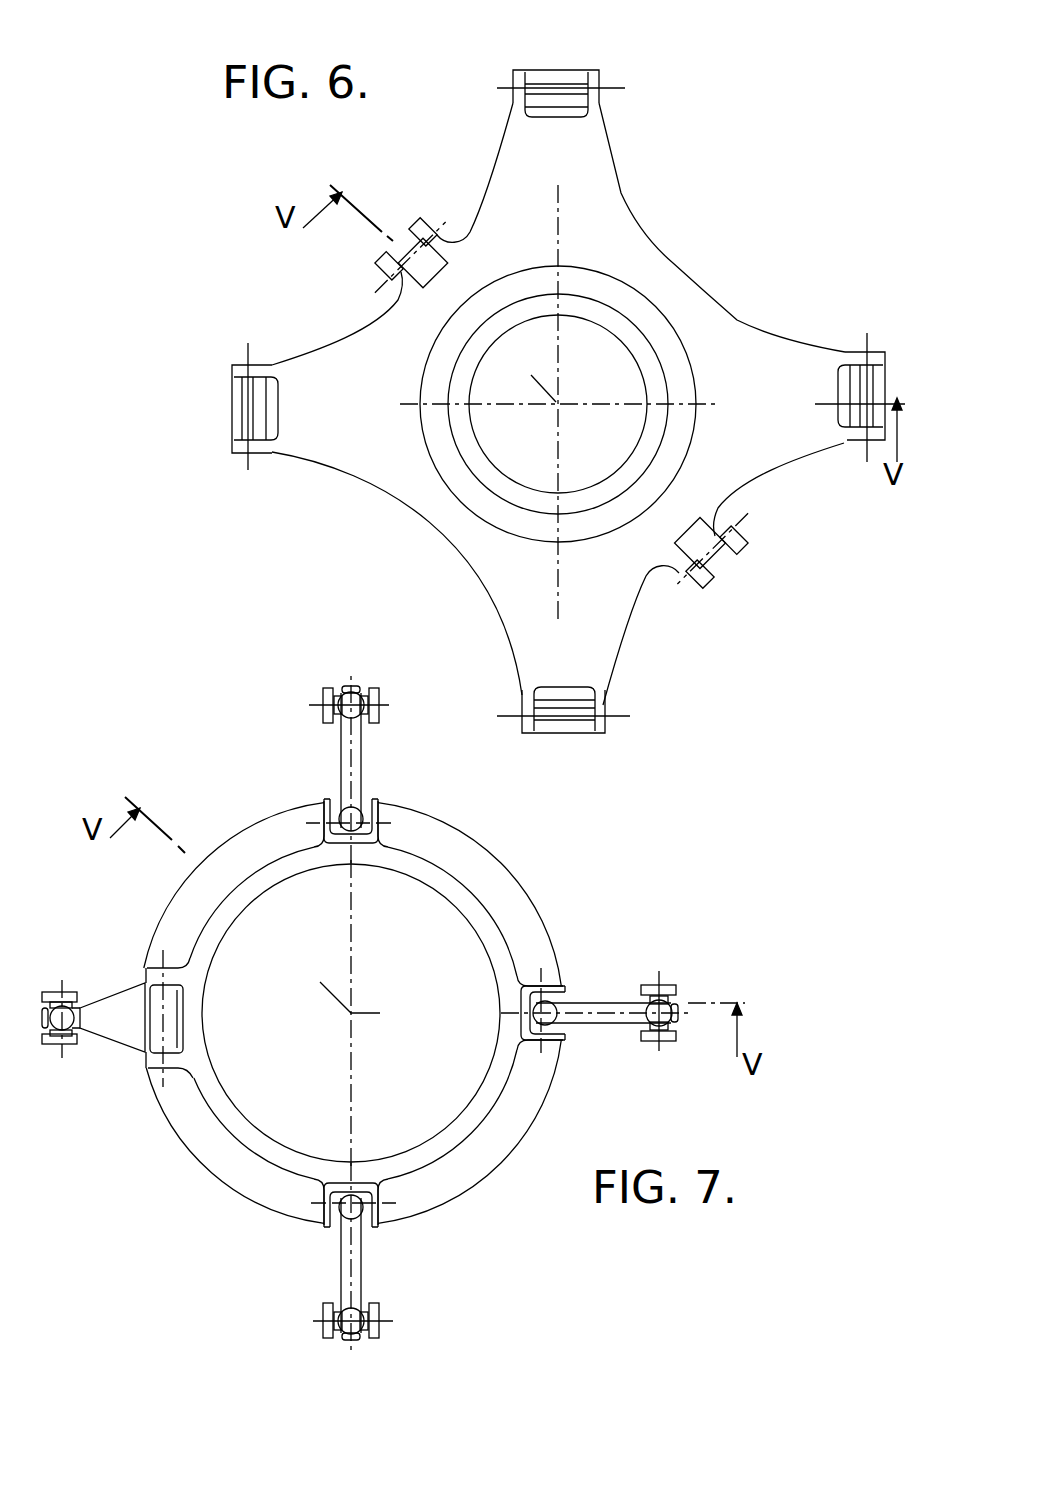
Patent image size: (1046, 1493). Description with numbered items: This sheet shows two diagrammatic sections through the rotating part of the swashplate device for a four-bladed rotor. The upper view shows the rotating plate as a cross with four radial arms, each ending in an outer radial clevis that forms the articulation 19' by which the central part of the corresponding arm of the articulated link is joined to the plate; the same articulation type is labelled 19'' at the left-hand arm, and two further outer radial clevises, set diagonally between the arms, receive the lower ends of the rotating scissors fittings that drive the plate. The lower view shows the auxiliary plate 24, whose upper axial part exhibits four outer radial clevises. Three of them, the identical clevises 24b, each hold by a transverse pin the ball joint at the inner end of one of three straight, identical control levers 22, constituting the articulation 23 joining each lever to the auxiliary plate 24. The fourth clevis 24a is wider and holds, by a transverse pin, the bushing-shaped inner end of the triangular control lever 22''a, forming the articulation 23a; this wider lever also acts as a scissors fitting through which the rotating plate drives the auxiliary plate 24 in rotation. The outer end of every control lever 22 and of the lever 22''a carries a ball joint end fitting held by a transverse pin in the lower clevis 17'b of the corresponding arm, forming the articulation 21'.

In FIG. 6, the articulation 19' is at (701, 409).
In FIG. 6, the ribbed insert 19'' is at (221, 406).
In FIG. 7, the auxiliary plate 24 is at (240, 1130).
In FIG. 7, the widened clevis 24a is at (170, 965).
In FIG. 7, the outer radial clevis 24b is at (370, 815).
In FIG. 7, the articulation 23 is at (362, 814).
In FIG. 7, the articulation 23a is at (151, 1065).
In FIG. 7, the control lever 22 is at (486, 1013).
In FIG. 7, the control lever 22''a is at (113, 989).
In FIG. 7, the articulation 21' is at (387, 982).
In FIG. 7, the clevis 17'b is at (383, 994).